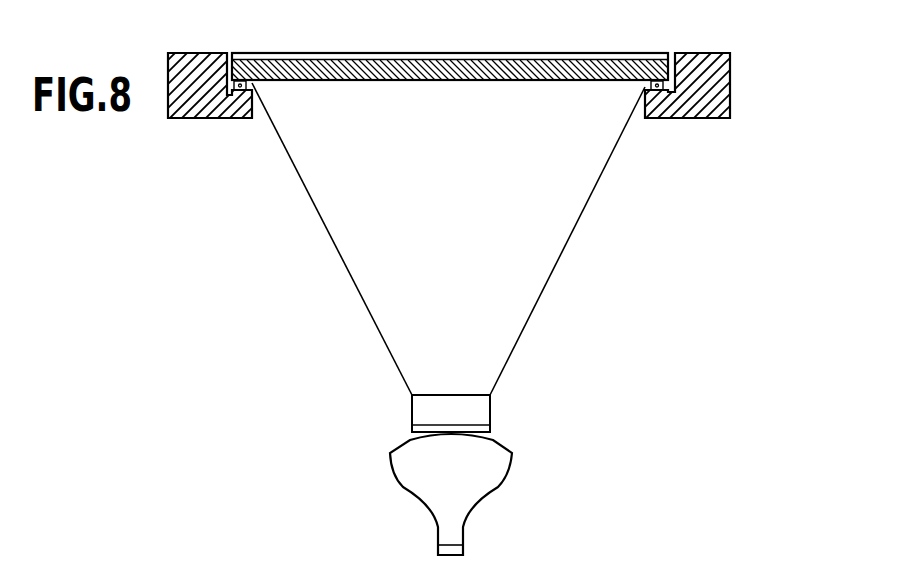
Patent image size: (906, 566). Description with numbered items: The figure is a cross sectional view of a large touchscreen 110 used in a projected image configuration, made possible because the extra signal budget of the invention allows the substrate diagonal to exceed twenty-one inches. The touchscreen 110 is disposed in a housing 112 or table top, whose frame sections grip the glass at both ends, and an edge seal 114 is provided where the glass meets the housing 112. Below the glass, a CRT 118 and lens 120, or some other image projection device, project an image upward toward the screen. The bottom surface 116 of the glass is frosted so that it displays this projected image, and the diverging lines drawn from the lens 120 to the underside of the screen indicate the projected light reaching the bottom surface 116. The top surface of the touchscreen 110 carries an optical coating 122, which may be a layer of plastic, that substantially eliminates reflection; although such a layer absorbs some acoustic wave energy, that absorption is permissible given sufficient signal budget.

The touchscreen 110 is at (488, 80).
The housing 112 is at (717, 118).
The edge seal 114 is at (645, 90).
The bottom surface 116 is at (515, 133).
The CRT 118 is at (495, 473).
The lens 120 is at (492, 412).
The optical coating 122 is at (487, 53).